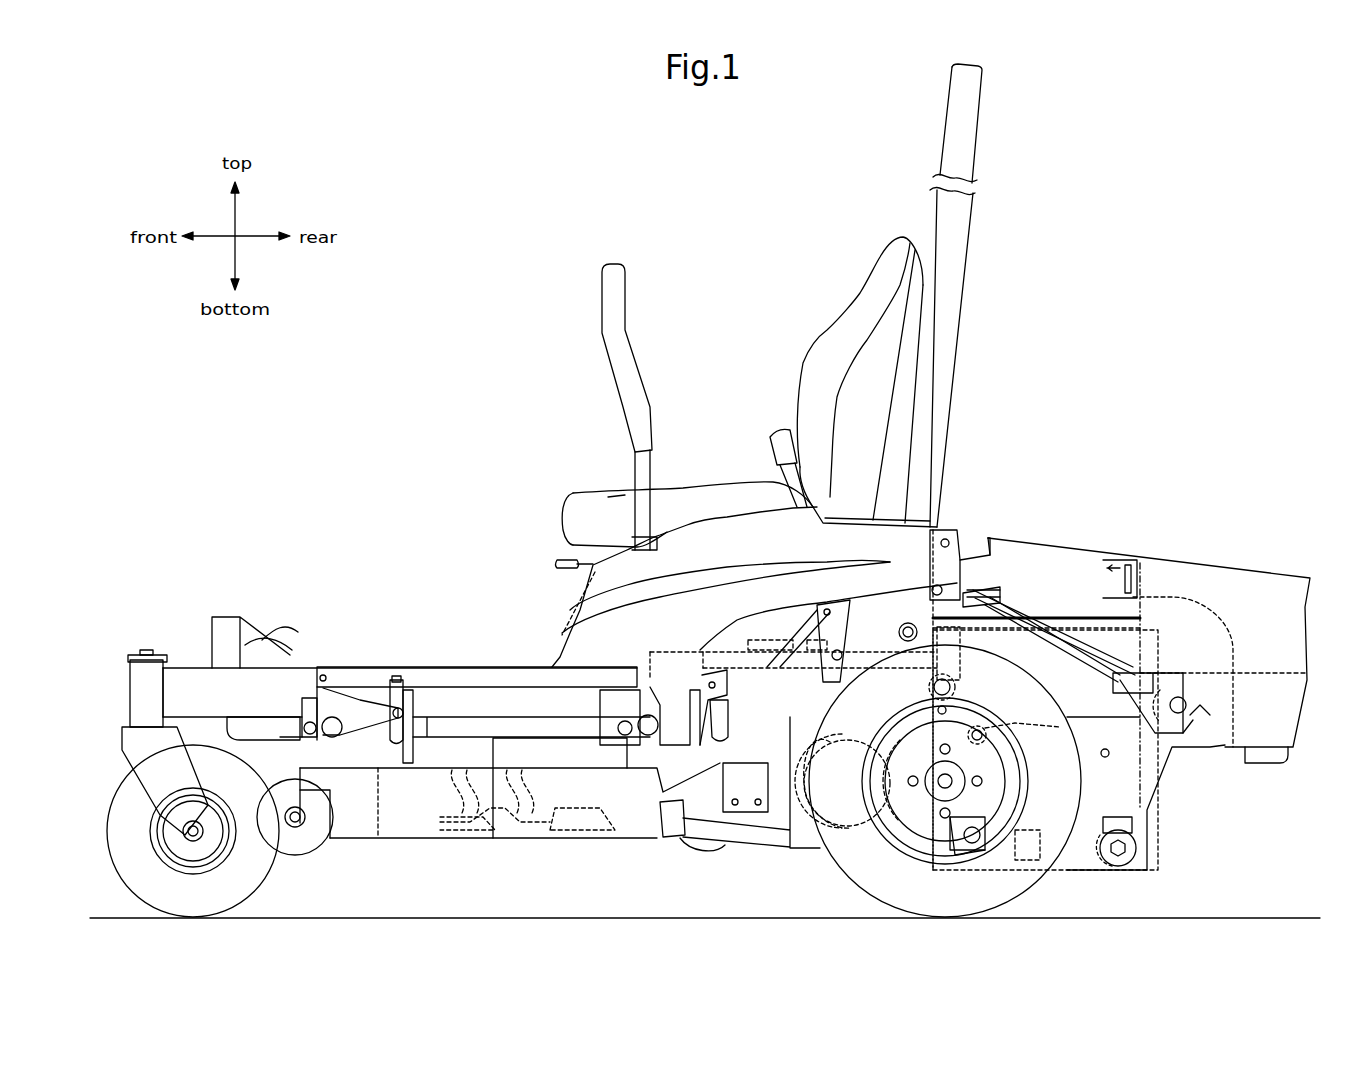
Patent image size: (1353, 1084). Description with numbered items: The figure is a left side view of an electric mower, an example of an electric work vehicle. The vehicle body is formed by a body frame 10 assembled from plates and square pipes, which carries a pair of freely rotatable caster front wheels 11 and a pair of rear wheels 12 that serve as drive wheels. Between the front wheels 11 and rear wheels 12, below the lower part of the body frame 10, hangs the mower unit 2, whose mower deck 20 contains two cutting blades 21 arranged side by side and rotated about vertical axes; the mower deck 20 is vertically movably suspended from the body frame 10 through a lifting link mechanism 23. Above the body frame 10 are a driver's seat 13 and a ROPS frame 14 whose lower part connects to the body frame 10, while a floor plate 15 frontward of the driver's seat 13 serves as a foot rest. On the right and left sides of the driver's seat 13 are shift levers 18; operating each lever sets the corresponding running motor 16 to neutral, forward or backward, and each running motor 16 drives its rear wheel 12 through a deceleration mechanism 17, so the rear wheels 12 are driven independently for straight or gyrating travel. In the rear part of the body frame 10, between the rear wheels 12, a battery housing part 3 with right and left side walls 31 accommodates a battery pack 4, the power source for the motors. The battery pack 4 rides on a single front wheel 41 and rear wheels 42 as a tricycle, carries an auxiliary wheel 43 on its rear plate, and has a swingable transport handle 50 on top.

The mower unit 2 is at (602, 840).
The battery housing part 3 is at (1085, 628).
The battery pack 4 is at (1147, 640).
The body frame 10 is at (190, 664).
The front wheel 11 is at (245, 885).
The rear wheel 12 is at (997, 892).
The driver's seat 13 is at (840, 330).
The ROPS frame 14 is at (958, 258).
The floor plate 15 is at (233, 622).
The running motor 16 is at (848, 822).
The deceleration mechanism 17 is at (872, 833).
The shift lever 18 is at (615, 357).
The mower deck 20 is at (453, 837).
The cutting blade 21 is at (567, 833).
The lifting link mechanism 23 is at (448, 666).
The side wall 31 is at (1082, 857).
The front wheel 41 is at (1027, 833).
The rear wheel 42 is at (1140, 847).
The auxiliary wheel 43 is at (1193, 720).
The transport handle 50 is at (973, 590).